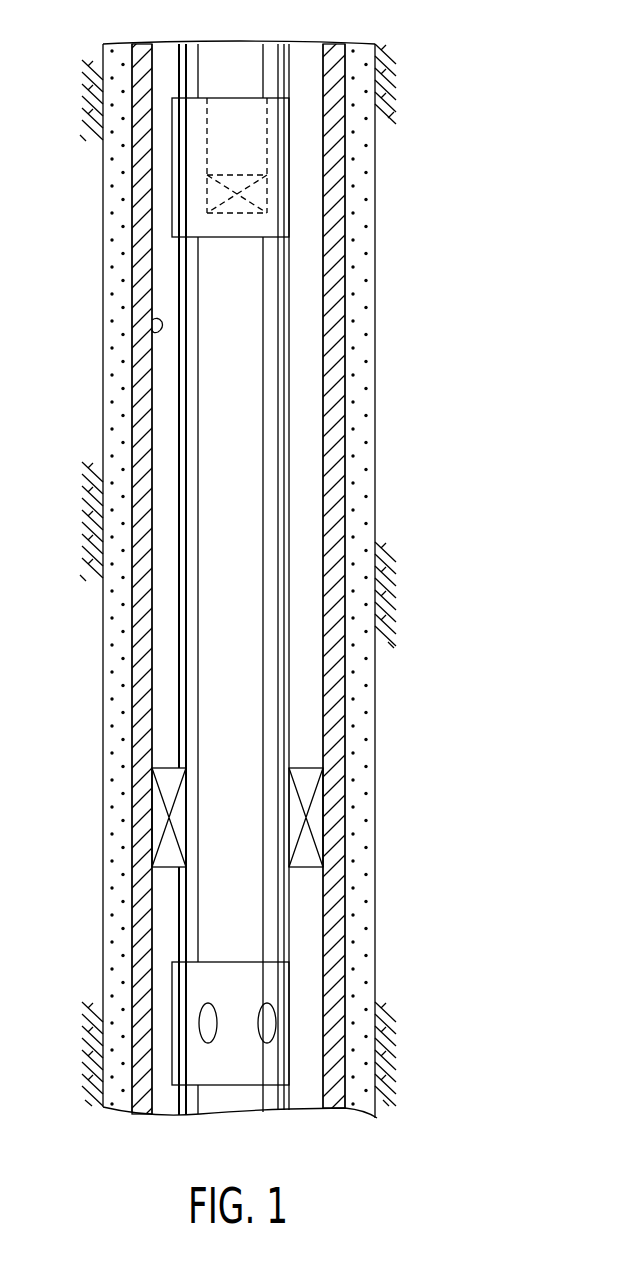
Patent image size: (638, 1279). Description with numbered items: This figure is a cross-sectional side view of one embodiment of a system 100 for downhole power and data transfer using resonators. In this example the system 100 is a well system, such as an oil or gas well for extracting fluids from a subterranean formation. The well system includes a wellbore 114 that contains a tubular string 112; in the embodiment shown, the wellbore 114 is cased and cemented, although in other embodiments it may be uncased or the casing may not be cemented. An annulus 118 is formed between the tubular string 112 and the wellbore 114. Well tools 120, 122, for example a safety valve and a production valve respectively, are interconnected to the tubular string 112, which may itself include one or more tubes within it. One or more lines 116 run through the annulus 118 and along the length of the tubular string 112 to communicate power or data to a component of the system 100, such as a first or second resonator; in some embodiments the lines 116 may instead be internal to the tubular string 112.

The system 100 is at (530, 58).
The tubular string 112 is at (289, 460).
The wellbore 114 is at (152, 330).
The lines 116 is at (178, 720).
The annulus 118 is at (312, 295).
The well tool 120 is at (289, 170).
The well tool 122 is at (289, 973).